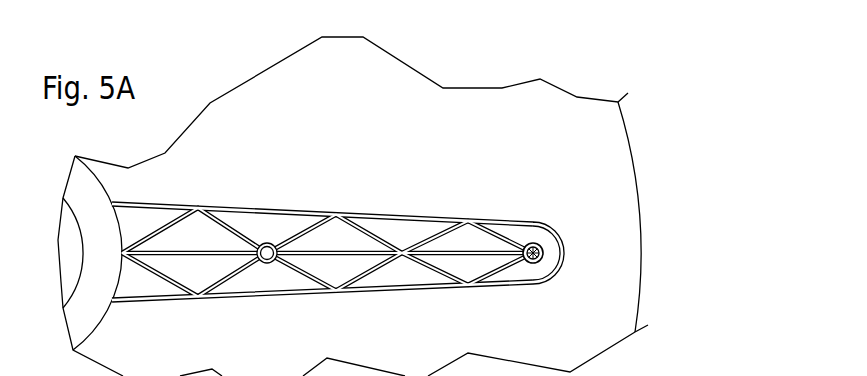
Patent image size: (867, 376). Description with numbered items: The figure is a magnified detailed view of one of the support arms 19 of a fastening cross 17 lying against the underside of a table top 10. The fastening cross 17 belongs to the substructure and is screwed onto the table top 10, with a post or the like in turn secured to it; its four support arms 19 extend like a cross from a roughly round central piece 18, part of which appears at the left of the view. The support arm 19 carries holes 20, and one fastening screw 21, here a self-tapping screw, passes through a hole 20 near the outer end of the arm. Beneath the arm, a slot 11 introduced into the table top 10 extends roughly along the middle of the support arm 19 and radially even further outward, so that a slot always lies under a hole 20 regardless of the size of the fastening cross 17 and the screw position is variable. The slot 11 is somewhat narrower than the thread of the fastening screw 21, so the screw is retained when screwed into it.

The table top 10 is at (342, 80).
The fastening cross 17 is at (112, 202).
The central piece 18 is at (100, 242).
The support arm 19 is at (398, 233).
The hole 20 is at (563, 248).
The fastening screw 21 is at (563, 252).
The slot 11 is at (563, 253).